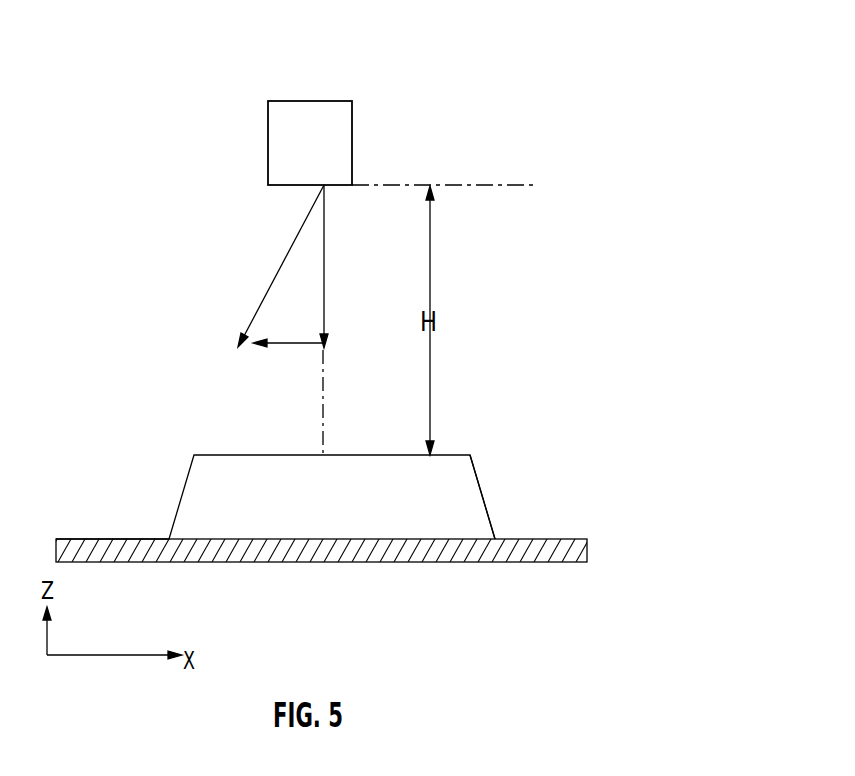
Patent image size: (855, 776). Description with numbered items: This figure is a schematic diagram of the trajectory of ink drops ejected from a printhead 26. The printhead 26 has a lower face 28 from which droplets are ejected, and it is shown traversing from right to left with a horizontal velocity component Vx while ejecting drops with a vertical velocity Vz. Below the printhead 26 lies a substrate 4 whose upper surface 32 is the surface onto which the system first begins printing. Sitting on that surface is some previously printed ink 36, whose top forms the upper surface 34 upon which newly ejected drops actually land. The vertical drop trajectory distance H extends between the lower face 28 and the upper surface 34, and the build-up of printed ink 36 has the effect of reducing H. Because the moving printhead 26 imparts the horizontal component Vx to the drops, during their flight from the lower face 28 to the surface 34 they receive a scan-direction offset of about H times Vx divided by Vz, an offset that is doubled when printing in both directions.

The substrate 4 is at (63, 539).
The printhead 26 is at (329, 101).
The lower face 28 is at (331, 185).
The upper surface 32 is at (114, 539).
The upper surface 34 is at (206, 455).
The previously printed ink 36 is at (458, 455).